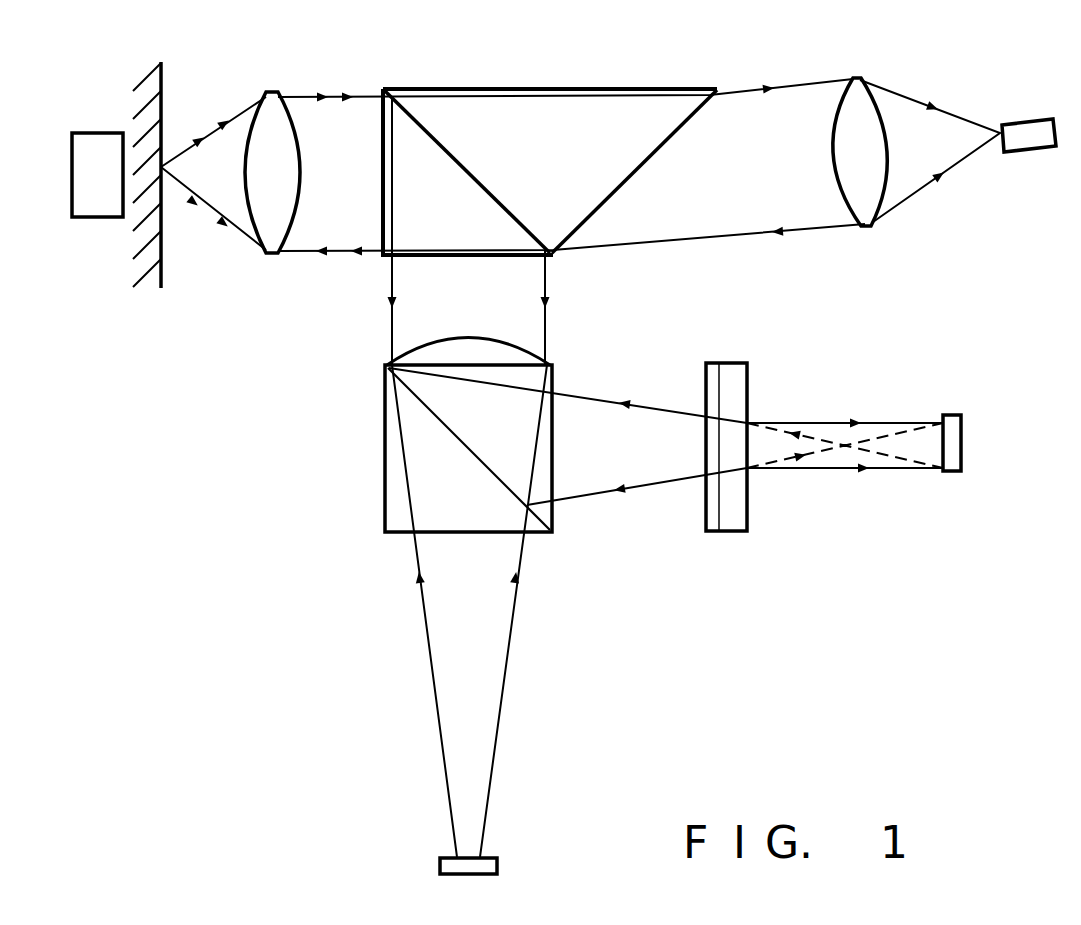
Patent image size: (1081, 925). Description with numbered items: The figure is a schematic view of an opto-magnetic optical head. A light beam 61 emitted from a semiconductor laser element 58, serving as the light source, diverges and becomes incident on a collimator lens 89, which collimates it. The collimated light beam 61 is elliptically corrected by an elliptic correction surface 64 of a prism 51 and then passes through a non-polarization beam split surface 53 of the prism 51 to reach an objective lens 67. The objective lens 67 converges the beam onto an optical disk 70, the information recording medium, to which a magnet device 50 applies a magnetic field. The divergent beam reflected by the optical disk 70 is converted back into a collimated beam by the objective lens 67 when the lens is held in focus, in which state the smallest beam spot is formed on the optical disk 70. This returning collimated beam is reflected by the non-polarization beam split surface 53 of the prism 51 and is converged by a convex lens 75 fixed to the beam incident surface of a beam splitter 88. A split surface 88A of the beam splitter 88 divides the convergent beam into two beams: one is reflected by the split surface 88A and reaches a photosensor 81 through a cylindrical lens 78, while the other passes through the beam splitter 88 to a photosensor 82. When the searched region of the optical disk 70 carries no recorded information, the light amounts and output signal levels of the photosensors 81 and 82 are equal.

The magnet device 50 is at (98, 133).
The optical disk 70 is at (161, 62).
The objective lens 67 is at (268, 92).
The light beam 61 is at (283, 257).
The prism 51 is at (468, 88).
The non-polarization beam split surface 53 is at (423, 122).
The elliptic correction surface 64 is at (608, 200).
The collimator lens 89 is at (855, 76).
The semiconductor laser element 58 is at (1034, 122).
The convex lens 75 is at (405, 352).
The beam splitter 88 is at (385, 497).
The split surface 88A is at (430, 412).
The cylindrical lens 78 is at (732, 363).
The photosensor 81 is at (951, 415).
The photosensor 82 is at (498, 866).